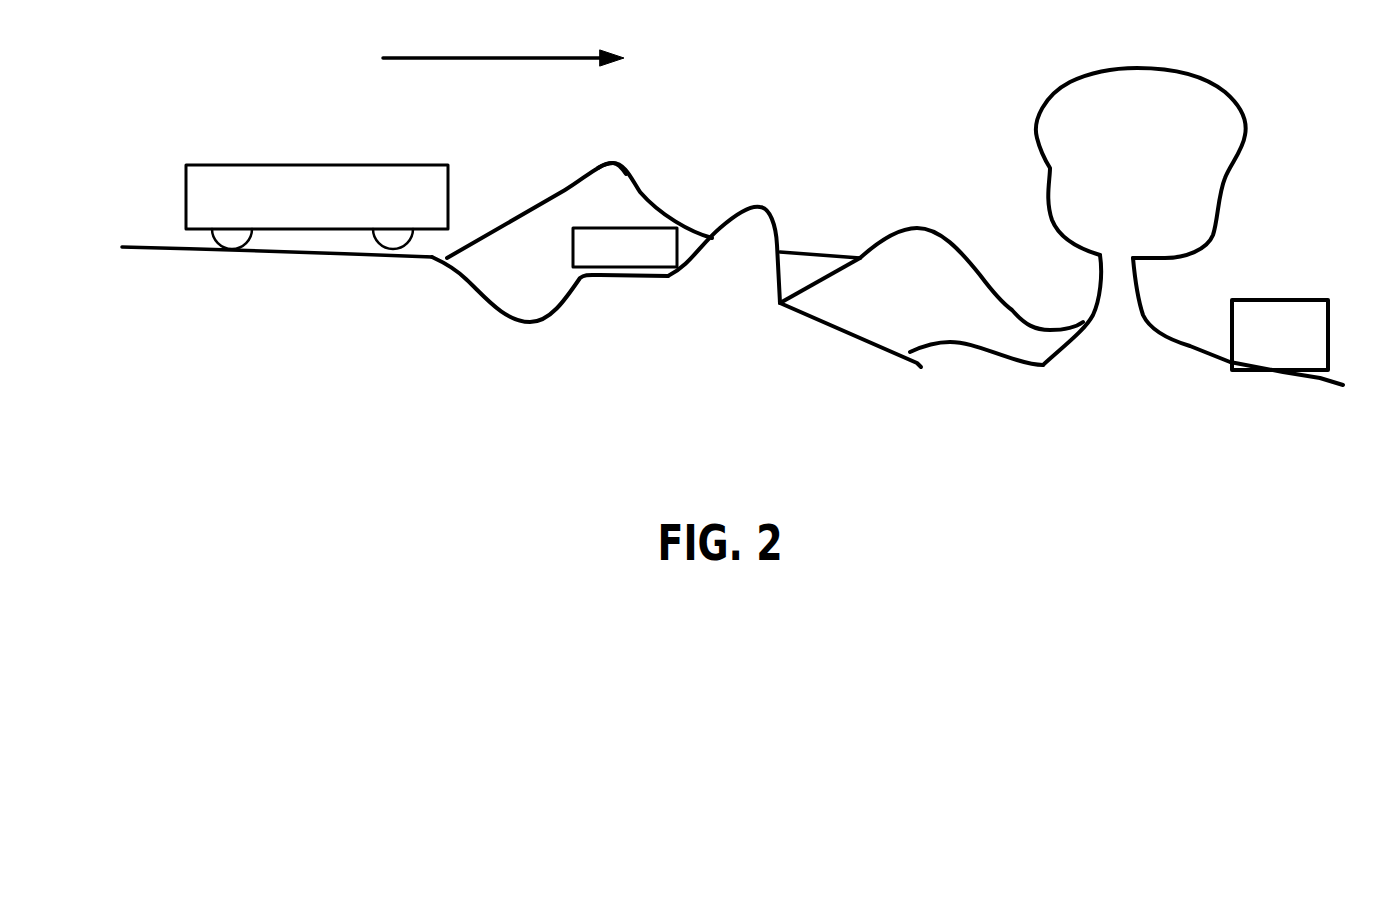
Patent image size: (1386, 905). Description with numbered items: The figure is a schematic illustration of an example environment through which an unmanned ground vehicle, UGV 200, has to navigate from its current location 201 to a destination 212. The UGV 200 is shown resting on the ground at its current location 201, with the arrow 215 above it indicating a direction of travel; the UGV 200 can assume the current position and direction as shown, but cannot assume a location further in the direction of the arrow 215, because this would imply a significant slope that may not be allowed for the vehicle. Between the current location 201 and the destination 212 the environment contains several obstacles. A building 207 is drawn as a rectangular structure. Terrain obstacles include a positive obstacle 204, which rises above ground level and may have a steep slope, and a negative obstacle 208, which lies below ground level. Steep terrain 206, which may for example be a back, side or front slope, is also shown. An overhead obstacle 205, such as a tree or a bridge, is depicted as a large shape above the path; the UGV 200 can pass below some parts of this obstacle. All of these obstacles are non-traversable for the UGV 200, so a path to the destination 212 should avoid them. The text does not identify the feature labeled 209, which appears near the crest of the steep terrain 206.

The UGV 200 is at (398, 163).
The current location 201 is at (363, 252).
The positive obstacle 204 is at (775, 210).
The overhead obstacle 205 is at (1237, 97).
The steep terrain 206 is at (645, 183).
The building 207 is at (620, 226).
The negative obstacle 208 is at (518, 327).
The peak point 209 is at (601, 186).
The destination 212 is at (1248, 298).
The arrow 215 is at (521, 58).